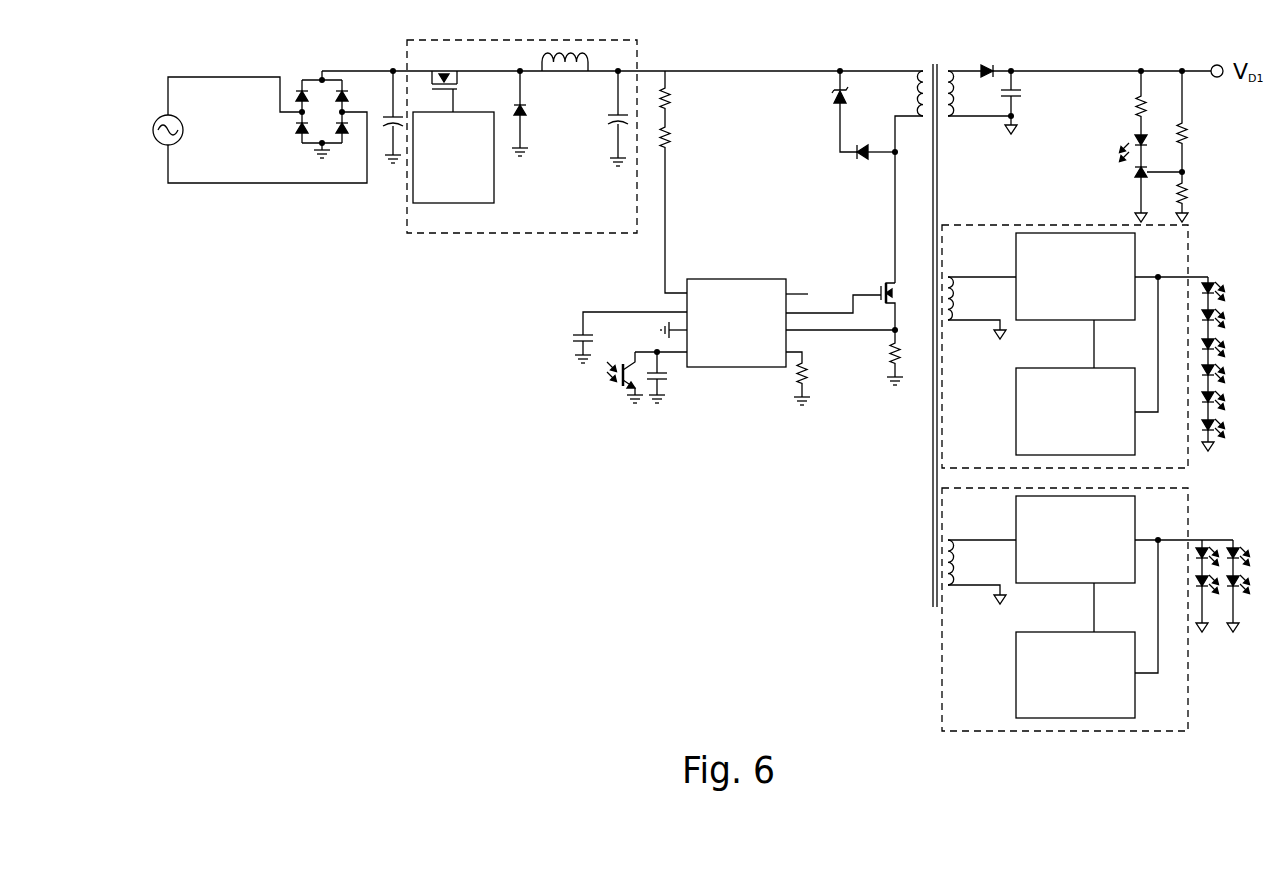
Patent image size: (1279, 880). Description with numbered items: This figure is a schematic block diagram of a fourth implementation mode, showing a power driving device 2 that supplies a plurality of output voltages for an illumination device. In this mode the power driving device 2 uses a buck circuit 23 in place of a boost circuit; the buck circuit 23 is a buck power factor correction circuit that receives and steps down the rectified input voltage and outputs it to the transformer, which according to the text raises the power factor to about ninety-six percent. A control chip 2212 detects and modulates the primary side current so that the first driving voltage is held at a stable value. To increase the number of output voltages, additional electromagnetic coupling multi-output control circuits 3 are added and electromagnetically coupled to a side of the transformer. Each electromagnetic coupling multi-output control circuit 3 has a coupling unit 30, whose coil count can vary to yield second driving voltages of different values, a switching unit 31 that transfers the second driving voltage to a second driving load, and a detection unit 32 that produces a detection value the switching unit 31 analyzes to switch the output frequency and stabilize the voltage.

The power driving device 2 is at (244, 62).
The buck circuit 23 is at (455, 235).
The control chip 2212 is at (712, 369).
The electromagnetic coupling multi-output control circuit 3 is at (1190, 248).
The coupling unit 30 is at (949, 276).
The switching unit 31 is at (1060, 321).
The detection unit 32 is at (1016, 410).